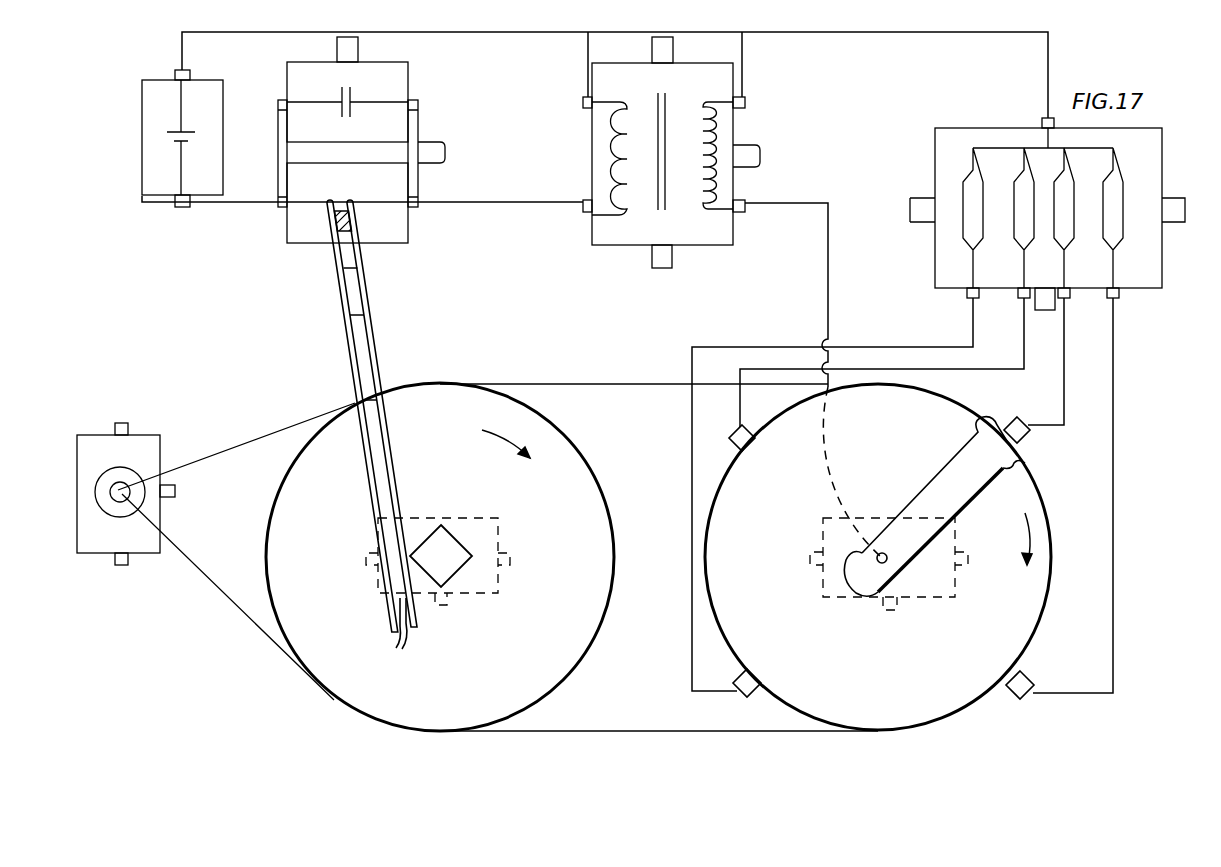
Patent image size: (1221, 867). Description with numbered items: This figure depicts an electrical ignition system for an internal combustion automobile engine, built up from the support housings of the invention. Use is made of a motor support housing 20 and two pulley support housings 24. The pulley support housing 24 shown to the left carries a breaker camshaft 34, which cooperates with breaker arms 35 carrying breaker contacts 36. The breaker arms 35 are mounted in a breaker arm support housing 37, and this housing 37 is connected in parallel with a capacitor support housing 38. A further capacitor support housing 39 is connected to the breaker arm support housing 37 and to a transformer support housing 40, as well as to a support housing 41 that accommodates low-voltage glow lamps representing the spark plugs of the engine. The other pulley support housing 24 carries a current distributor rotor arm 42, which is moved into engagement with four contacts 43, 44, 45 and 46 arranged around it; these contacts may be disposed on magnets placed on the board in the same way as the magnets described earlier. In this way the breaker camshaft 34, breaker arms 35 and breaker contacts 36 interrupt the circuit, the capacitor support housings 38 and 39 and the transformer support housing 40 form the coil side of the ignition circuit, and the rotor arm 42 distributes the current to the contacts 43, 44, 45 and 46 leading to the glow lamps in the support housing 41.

The motor support housing 20 is at (143, 554).
The pulley support housing 24 is at (484, 590).
The breaker camshaft 34 is at (450, 545).
The breaker arms 35 is at (352, 321).
The breaker contacts 36 is at (383, 634).
The breaker arm support housing 37 is at (408, 232).
The capacitor support housing 38 is at (409, 72).
The capacitor support housing 39 is at (148, 197).
The transformer support housing 40 is at (733, 125).
The glow lamp support housing 41 is at (972, 128).
The current distributor rotor arm 42 is at (929, 499).
The contact 43 is at (1012, 695).
The contact 44 is at (740, 694).
The contact 45 is at (748, 436).
The contact 46 is at (1012, 425).